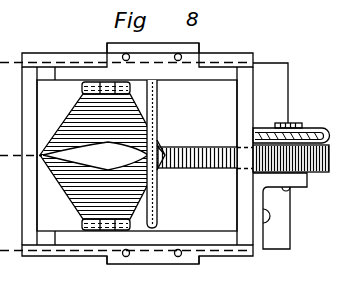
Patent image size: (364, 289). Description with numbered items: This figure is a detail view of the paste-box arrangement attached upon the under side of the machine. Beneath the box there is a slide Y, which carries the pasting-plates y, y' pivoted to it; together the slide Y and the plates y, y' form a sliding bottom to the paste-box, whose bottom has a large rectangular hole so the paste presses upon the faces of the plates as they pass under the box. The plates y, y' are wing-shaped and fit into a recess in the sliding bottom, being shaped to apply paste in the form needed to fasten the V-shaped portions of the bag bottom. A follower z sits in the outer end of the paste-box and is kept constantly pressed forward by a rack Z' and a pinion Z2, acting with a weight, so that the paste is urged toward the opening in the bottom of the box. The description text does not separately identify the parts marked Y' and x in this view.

The slide Y is at (144, 153).
The guide bar Y' is at (63, 268).
The housing x is at (118, 156).
The pasting-plate y is at (95, 171).
The pasting-plate y' is at (101, 156).
The follower z is at (157, 118).
The rack Z' is at (205, 148).
The pinion Z2 is at (304, 160).